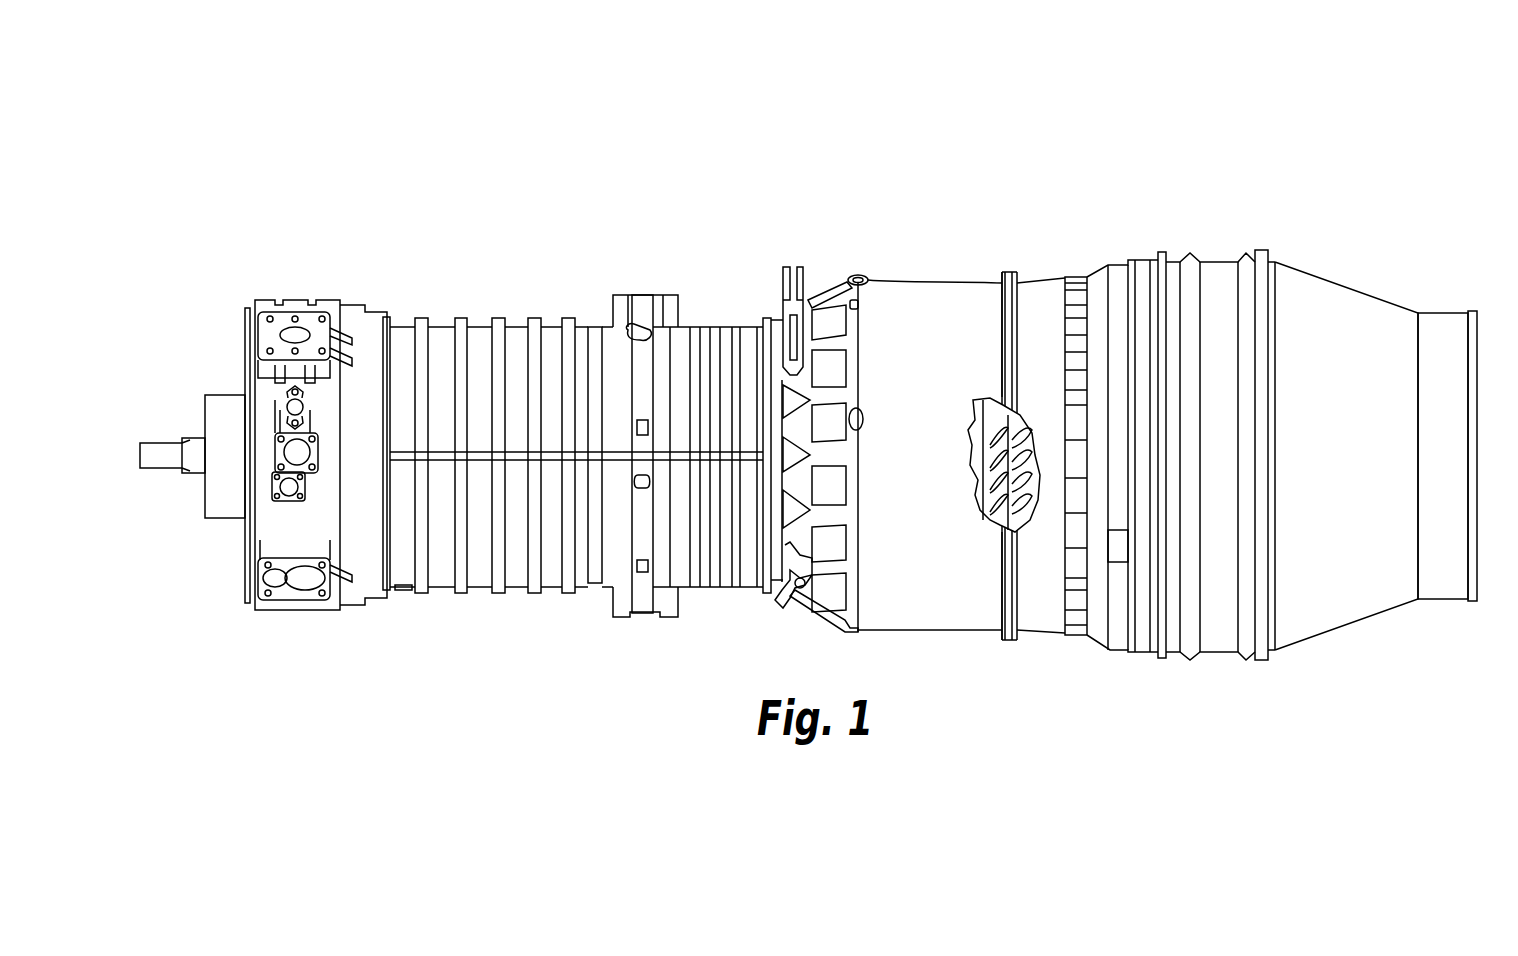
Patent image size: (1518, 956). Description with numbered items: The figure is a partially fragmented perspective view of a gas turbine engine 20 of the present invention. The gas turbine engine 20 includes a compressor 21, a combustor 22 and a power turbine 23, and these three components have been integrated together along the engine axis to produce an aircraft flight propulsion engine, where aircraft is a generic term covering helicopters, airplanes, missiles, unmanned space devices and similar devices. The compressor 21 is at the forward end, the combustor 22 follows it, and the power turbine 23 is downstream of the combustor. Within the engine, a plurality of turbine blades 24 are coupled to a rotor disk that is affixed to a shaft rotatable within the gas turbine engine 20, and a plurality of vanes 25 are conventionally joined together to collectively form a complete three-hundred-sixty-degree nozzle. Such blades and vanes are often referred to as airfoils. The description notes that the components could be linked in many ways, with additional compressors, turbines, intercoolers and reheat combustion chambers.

The gas turbine engine 20 is at (1272, 110).
The compressor 21 is at (568, 591).
The combustor 22 is at (898, 278).
The power turbine 23 is at (1212, 262).
The turbine blades 24 is at (1035, 425).
The vanes 25 is at (992, 517).